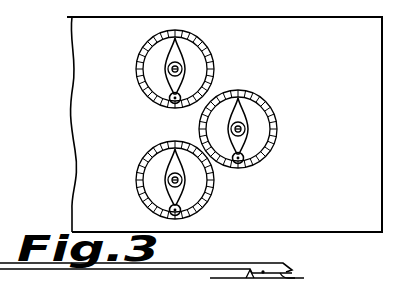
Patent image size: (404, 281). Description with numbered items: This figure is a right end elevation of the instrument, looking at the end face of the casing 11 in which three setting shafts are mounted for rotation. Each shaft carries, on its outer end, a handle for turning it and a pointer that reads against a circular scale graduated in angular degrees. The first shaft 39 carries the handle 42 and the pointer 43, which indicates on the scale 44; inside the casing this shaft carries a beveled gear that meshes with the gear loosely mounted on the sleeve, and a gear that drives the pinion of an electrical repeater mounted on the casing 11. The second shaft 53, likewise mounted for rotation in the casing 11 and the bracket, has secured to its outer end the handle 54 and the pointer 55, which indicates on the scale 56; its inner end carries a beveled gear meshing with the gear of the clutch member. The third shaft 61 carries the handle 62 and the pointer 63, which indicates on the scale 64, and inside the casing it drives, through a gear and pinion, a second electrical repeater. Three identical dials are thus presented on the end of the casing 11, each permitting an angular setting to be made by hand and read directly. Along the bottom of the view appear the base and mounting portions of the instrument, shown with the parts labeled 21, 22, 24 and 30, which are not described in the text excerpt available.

The casing 11 is at (73, 203).
The base plate 21 is at (146, 272).
The support strip 22 is at (111, 278).
The mounting bracket 24 is at (304, 279).
The fastener 30 is at (293, 272).
The shaft 39 is at (183, 69).
The handle 42 is at (172, 102).
The pointer 43 is at (137, 55).
The scale 44 is at (196, 47).
The shaft 53 is at (246, 129).
The handle 54 is at (246, 163).
The pointer 55 is at (232, 105).
The scale 56 is at (262, 96).
The shaft 61 is at (183, 181).
The handle 62 is at (181, 213).
The pointer 63 is at (137, 166).
The scale 64 is at (141, 182).